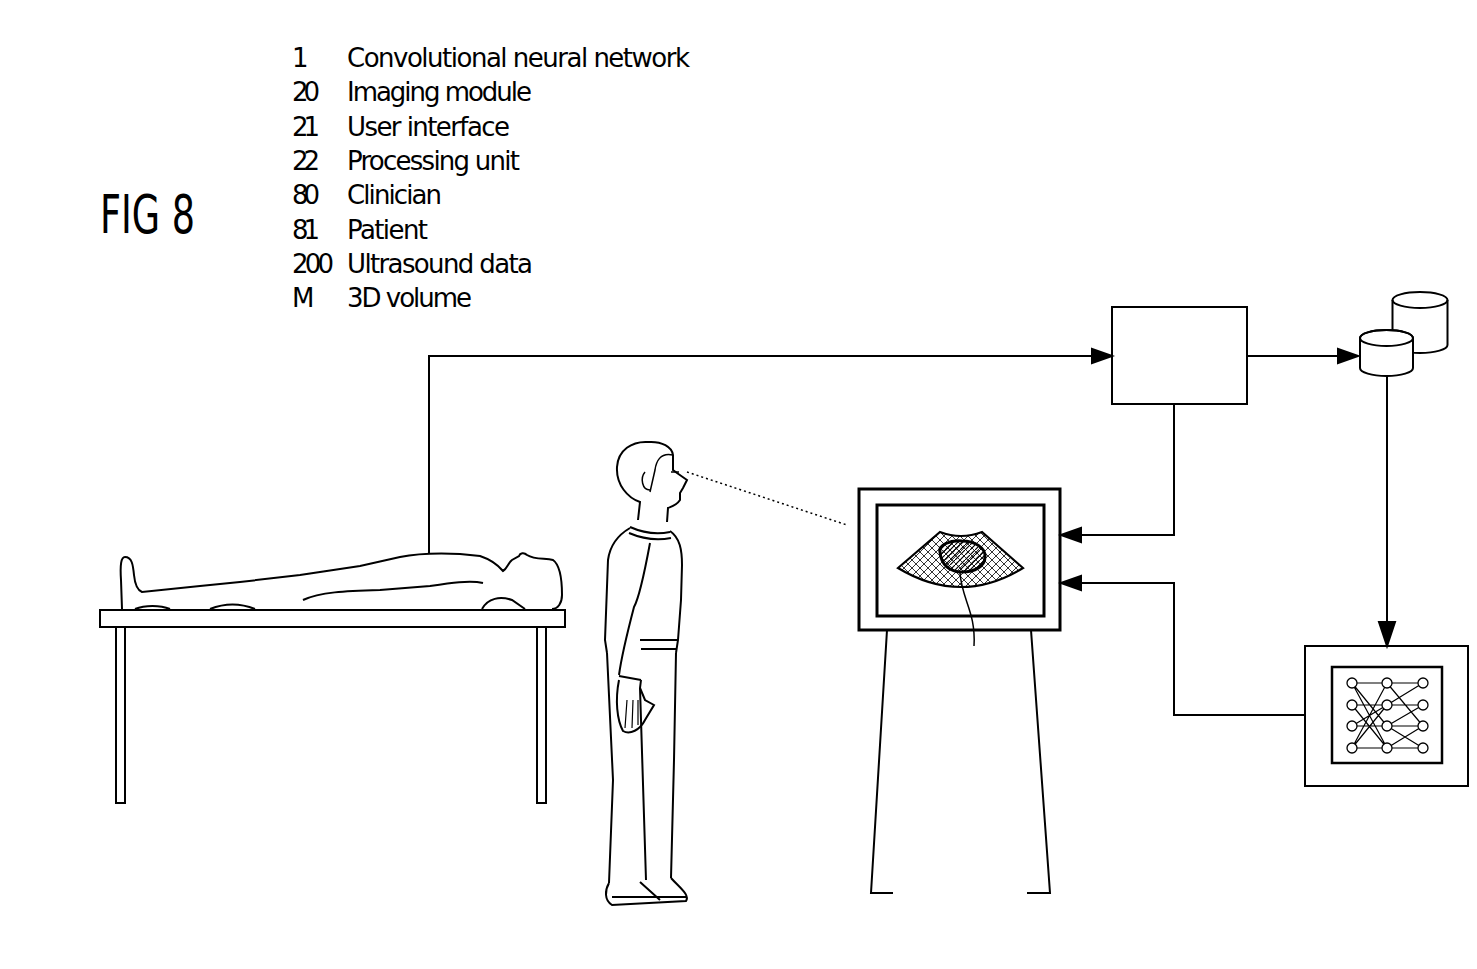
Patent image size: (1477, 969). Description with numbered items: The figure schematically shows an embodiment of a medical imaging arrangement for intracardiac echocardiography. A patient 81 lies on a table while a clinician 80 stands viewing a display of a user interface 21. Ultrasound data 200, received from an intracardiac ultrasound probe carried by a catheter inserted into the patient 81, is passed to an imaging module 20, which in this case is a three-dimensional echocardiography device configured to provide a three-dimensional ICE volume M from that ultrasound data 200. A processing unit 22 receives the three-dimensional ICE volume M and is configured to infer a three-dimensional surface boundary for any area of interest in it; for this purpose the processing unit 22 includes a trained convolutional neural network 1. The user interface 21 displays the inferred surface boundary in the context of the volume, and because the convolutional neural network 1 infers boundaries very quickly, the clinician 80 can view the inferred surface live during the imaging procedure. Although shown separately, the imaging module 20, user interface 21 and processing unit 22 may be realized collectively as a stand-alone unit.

The convolutional neural network 1 is at (1357, 667).
The imaging module 20 is at (1178, 307).
The user interface 21 is at (960, 489).
The processing unit 22 is at (1423, 646).
The clinician 80 is at (683, 607).
The patient 81 is at (368, 557).
The ultrasound data 200 is at (792, 356).
The 3D ICE volume M is at (1372, 288).